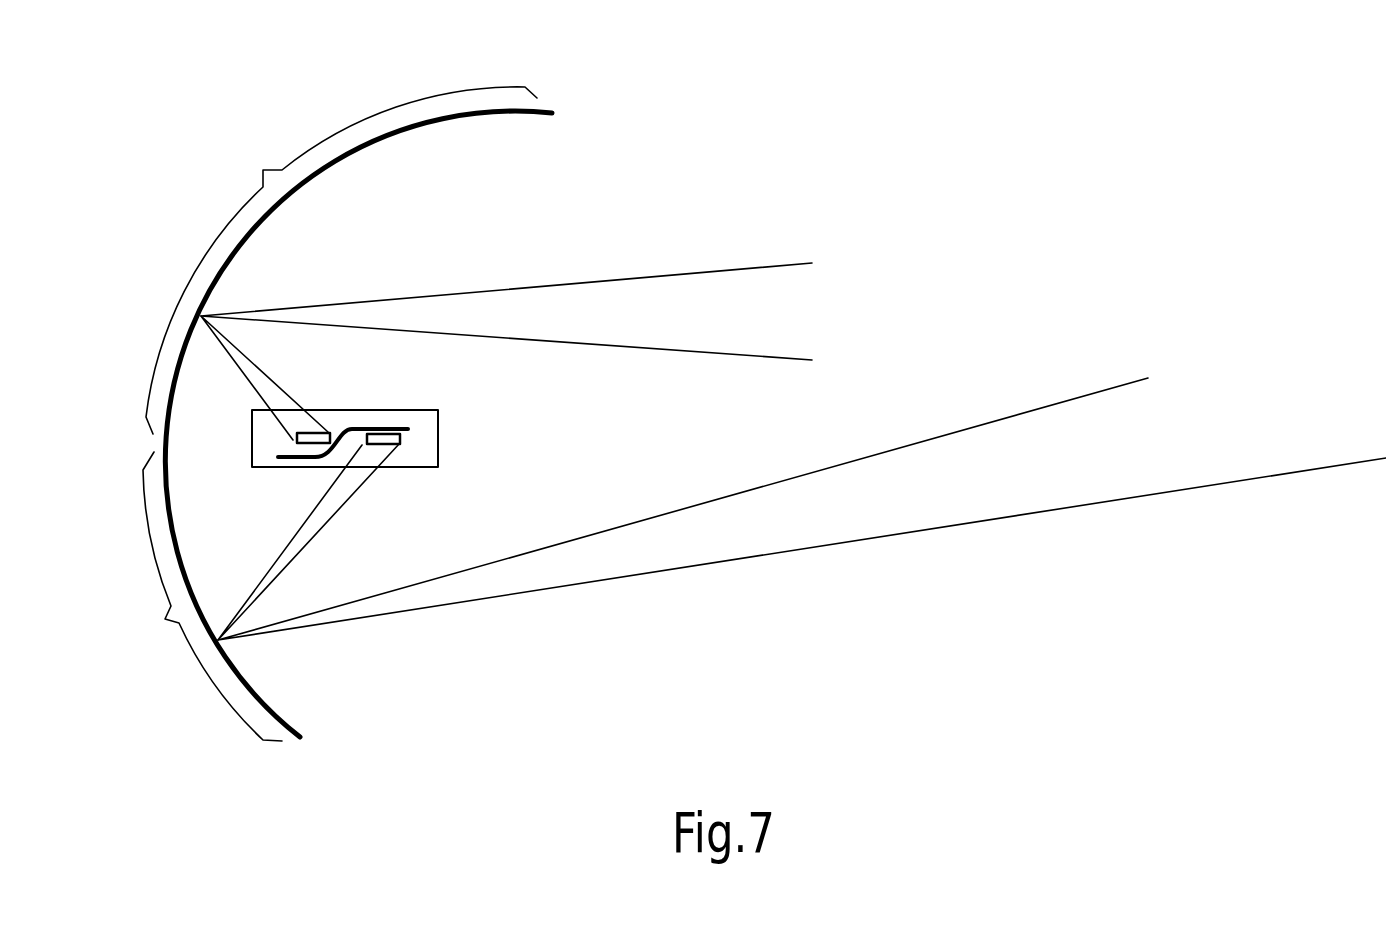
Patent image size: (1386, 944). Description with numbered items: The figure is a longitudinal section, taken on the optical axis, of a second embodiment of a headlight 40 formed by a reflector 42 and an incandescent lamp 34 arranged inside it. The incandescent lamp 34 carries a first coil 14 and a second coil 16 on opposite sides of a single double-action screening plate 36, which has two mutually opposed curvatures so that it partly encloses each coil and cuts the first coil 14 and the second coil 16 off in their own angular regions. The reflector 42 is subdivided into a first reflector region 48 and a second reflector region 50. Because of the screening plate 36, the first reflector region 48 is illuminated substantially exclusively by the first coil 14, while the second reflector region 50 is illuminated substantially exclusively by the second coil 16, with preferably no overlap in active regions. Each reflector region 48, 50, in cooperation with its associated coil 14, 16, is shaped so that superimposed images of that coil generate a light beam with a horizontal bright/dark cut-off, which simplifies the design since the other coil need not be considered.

The first coil 14 is at (322, 430).
The second coil 16 is at (400, 437).
The incandescent lamp 34 is at (438, 440).
The screening plate 36 is at (387, 427).
The headlight 40 is at (608, 149).
The reflector 42 is at (165, 447).
The first reflector region 48 is at (341, 260).
The second reflector region 50 is at (205, 596).